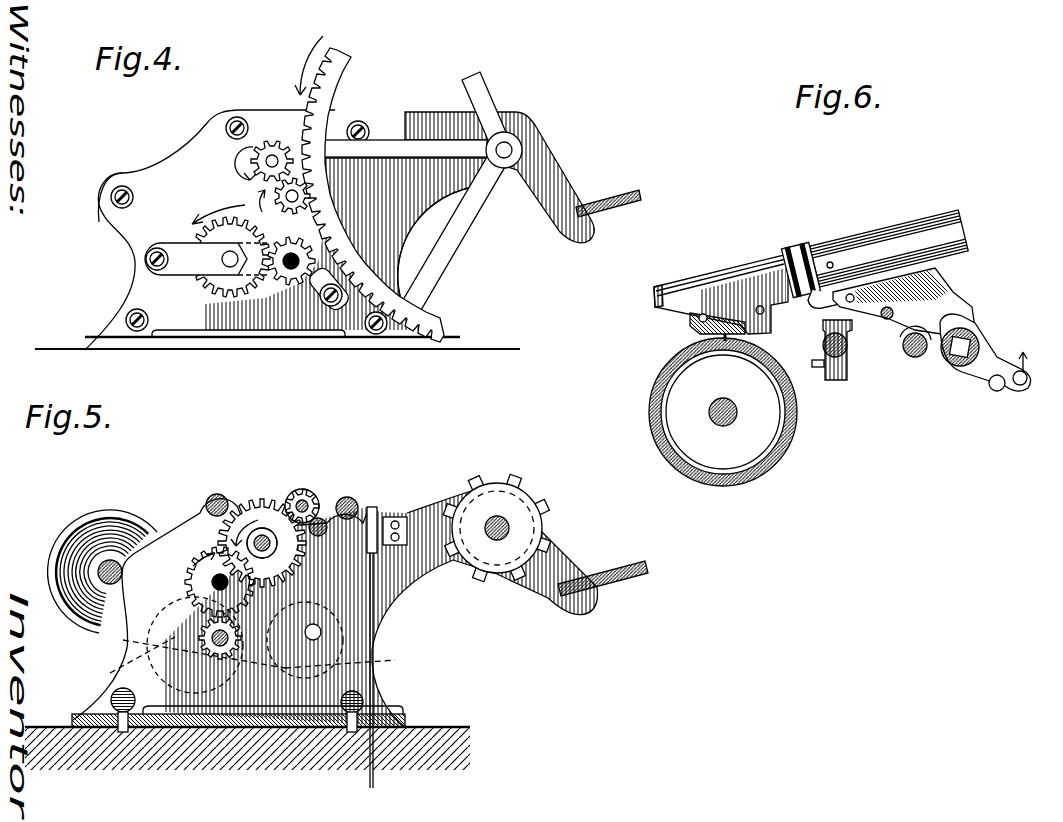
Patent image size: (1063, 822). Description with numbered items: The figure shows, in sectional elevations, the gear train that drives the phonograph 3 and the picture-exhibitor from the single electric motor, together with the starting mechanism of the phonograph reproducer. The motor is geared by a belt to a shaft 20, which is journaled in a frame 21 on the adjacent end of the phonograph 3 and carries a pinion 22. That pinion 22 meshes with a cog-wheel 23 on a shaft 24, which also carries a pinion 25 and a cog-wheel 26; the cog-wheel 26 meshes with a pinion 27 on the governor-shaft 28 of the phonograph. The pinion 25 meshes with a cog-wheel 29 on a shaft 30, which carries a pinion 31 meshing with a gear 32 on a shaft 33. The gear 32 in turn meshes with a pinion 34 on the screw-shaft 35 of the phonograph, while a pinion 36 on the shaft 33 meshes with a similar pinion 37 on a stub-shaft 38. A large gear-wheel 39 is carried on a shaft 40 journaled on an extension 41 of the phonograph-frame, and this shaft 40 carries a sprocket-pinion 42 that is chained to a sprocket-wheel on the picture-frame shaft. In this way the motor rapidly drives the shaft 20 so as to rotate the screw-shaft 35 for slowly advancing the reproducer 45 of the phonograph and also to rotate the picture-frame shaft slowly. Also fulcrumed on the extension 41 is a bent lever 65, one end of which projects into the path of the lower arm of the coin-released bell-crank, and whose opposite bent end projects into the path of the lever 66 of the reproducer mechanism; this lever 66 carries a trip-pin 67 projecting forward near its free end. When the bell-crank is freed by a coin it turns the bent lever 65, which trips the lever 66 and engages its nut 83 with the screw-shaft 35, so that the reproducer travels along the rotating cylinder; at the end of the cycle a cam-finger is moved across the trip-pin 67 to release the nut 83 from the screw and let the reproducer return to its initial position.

In FIG. 4, the phonograph 3 is at (277, 230).
In FIG. 5, the phonograph 3 is at (311, 627).
In FIG. 6, the phonograph 3 is at (733, 412).
In FIG. 4, the shaft 20 is at (310, 268).
In FIG. 4, the frame 21 is at (133, 212).
In FIG. 4, the pinion 22 is at (300, 252).
In FIG. 4, the cog-wheel 23 is at (207, 280).
In FIG. 4, the shaft 24 is at (206, 260).
In FIG. 5, the shaft 24 is at (238, 640).
In FIG. 5, the pinion 25 is at (218, 650).
In FIG. 5, the cog-wheel 26 is at (121, 665).
In FIG. 5, the pinion 27 is at (273, 661).
In FIG. 5, the governor-shaft 28 is at (320, 630).
In FIG. 5, the cog-wheel 29 is at (200, 634).
In FIG. 5, the shaft 30 is at (193, 582).
In FIG. 5, the pinion 31 is at (195, 565).
In FIG. 5, the gear 32 is at (262, 516).
In FIG. 4, the shaft 33 is at (273, 152).
In FIG. 5, the shaft 33 is at (268, 548).
In FIG. 5, the pinion 34 is at (315, 500).
In FIG. 5, the screw-shaft 35 is at (301, 495).
In FIG. 6, the screw-shaft 35 is at (910, 358).
In FIG. 4, the pinion 36 is at (253, 165).
In FIG. 4, the pinion 37 is at (228, 202).
In FIG. 4, the stub-shaft 38 is at (313, 187).
In FIG. 4, the large gear-wheel 39 is at (338, 92).
In FIG. 4, the shaft 40 is at (512, 147).
In FIG. 5, the shaft 40 is at (510, 522).
In FIG. 4, the extension 41 is at (562, 187).
In FIG. 5, the extension 41 is at (535, 590).
In FIG. 5, the sprocket-pinion 42 is at (484, 500).
In FIG. 6, the reproducer 45 is at (811, 272).
In FIG. 4, the bent lever 65 is at (607, 207).
In FIG. 5, the bent lever 65 is at (603, 586).
In FIG. 6, the bent lever 65 is at (997, 392).
In FIG. 6, the lever 66 is at (985, 368).
In FIG. 6, the trip-pin 67 is at (1021, 387).
In FIG. 6, the nut 83 is at (925, 322).